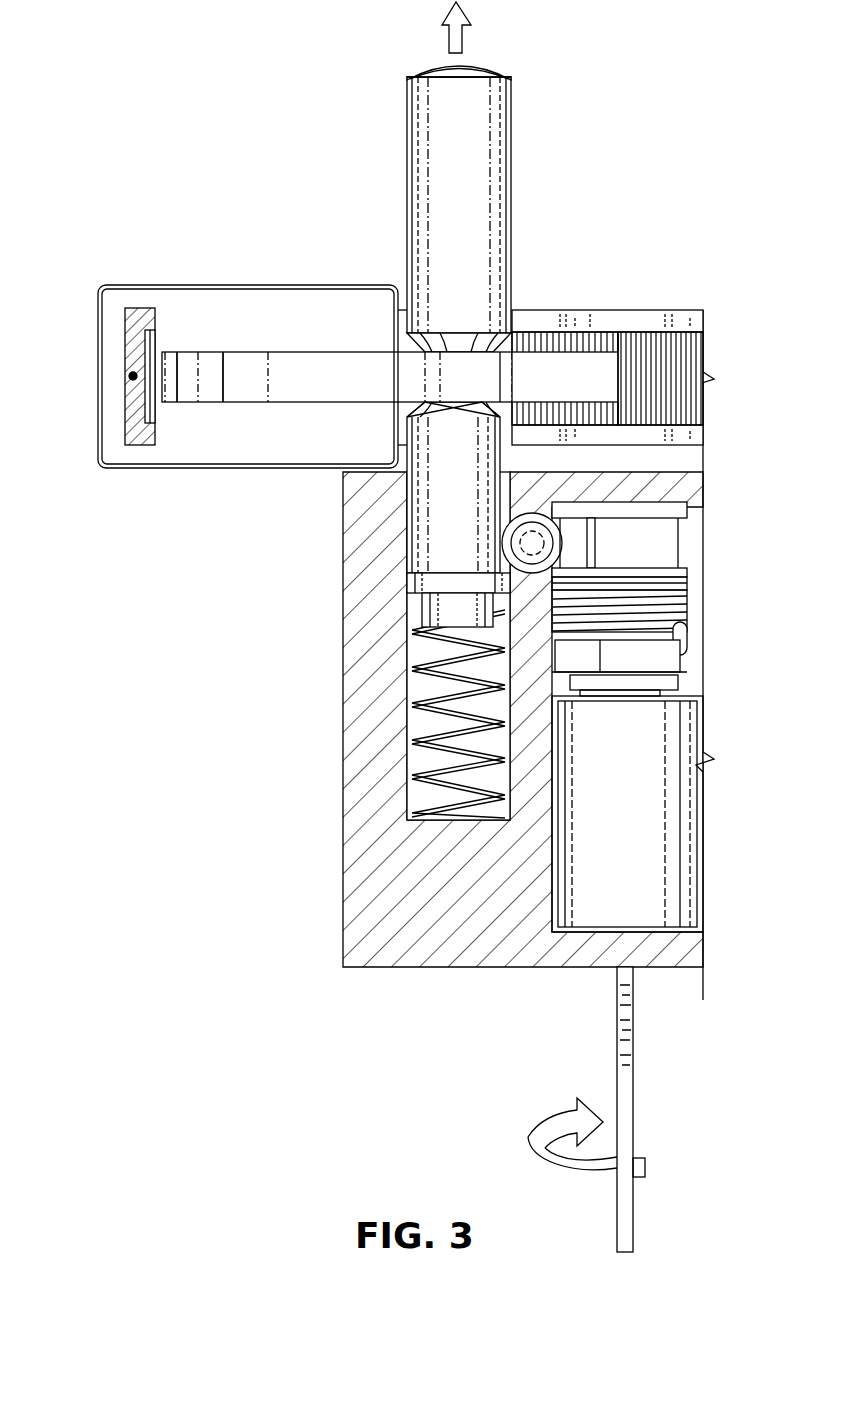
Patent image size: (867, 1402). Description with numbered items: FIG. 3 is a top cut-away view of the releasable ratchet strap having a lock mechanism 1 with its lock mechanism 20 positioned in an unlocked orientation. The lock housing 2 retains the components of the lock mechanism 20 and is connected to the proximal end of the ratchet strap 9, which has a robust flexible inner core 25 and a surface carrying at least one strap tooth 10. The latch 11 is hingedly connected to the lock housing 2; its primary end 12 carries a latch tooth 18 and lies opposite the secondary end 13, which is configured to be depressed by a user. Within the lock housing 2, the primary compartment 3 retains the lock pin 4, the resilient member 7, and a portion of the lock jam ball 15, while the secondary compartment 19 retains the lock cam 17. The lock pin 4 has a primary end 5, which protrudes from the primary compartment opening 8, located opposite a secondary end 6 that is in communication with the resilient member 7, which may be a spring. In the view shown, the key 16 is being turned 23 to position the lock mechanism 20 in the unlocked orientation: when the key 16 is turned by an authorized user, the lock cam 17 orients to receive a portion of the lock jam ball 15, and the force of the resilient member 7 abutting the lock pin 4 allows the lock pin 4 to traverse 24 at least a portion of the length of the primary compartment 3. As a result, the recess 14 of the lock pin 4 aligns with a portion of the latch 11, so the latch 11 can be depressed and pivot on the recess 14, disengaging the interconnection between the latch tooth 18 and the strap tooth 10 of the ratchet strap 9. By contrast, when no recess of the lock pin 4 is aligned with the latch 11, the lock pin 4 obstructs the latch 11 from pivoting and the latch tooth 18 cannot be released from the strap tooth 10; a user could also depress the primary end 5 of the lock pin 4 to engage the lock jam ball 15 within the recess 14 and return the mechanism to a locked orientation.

The releasable ratchet strap having a lock mechanism 1 is at (607, 205).
The lock housing 2 is at (343, 768).
The primary compartment 3 is at (410, 683).
The lock pin 4 is at (425, 136).
The primary end 5 is at (440, 70).
The secondary end 6 is at (410, 572).
The resilient member 7 is at (410, 712).
The primary compartment opening 8 is at (513, 306).
The ratchet strap 9 is at (128, 445).
The strap tooth 10 is at (153, 413).
The latch 11 is at (332, 372).
The primary end 12 is at (238, 366).
The secondary end 13 is at (592, 358).
The recess 14 is at (412, 407).
The lock jam ball 15 is at (545, 512).
The key 16 is at (617, 1065).
The lock cam 17 is at (577, 545).
The latch tooth 18 is at (168, 364).
The secondary compartment 19 is at (696, 598).
The lock mechanism 20 is at (607, 655).
The turn 23 is at (527, 1140).
The traverse 24 is at (448, 20).
The flexible inner core 25 is at (130, 383).